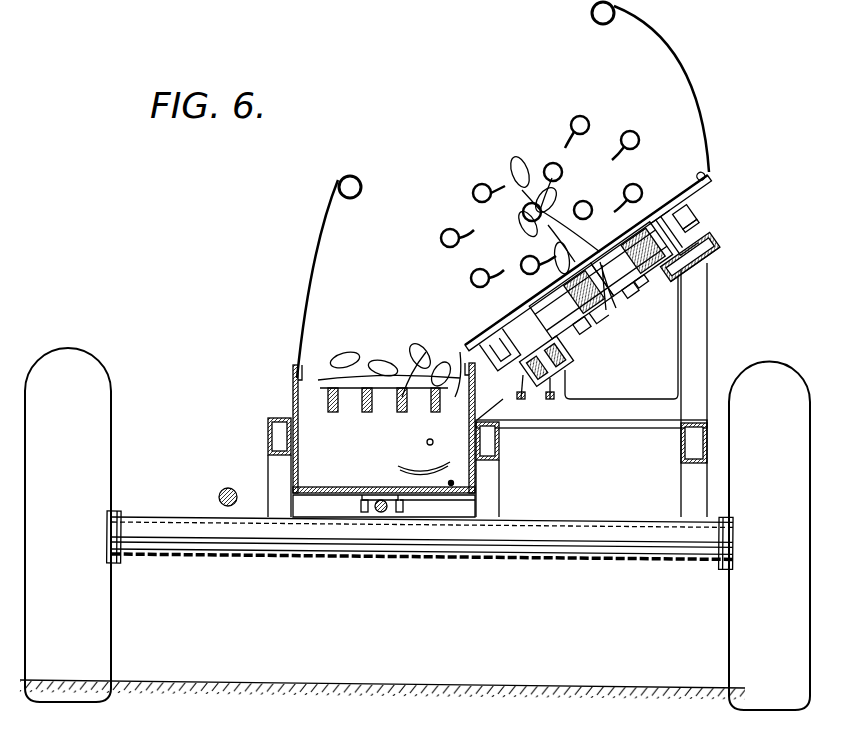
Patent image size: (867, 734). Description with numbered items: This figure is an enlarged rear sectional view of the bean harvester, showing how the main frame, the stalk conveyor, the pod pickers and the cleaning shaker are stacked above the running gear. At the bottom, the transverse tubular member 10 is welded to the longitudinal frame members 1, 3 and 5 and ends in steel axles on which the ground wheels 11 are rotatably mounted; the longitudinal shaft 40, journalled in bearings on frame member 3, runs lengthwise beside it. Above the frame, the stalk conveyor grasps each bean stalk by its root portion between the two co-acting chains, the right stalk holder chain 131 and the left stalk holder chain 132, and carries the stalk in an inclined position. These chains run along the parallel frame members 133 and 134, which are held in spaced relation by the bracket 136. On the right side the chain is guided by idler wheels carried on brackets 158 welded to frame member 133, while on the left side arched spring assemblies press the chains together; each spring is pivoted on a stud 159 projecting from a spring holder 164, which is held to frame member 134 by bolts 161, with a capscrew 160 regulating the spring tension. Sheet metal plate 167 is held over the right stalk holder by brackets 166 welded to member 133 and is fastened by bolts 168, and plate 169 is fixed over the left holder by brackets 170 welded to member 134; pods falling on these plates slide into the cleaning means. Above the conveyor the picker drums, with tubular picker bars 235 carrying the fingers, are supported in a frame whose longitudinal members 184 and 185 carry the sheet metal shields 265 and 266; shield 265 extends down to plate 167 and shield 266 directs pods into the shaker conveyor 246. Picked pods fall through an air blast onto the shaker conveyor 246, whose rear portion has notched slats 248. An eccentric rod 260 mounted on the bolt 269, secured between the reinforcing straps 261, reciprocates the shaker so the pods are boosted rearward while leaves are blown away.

The outside longitudinal frame member 1 is at (681, 453).
The outside longitudinal frame member 3 is at (267, 428).
The longitudinal frame member 5 is at (497, 455).
The transverse tubular member 10 is at (167, 553).
The ground wheel 11 is at (97, 657).
The longitudinal shaft 40 is at (223, 489).
The right stalk holder chain 131 is at (702, 218).
The left stalk holder chain 132 is at (500, 337).
The right stalk holder frame member 133 is at (697, 272).
The left stalk holder frame member 134 is at (563, 368).
The bracket 136 is at (695, 342).
The bracket 158 is at (640, 280).
The stud 159 is at (628, 292).
The capscrew 160 is at (523, 377).
The bolt 161 is at (550, 380).
The spring holder 164 is at (477, 353).
The bracket 166 is at (703, 263).
The plate 167 is at (687, 193).
The bolt 168 is at (663, 220).
The plate 169 is at (535, 303).
The bracket 170 is at (550, 340).
The longitudinal picker frame member 184 is at (591, 18).
The longitudinal picker frame member 185 is at (355, 176).
The picker bar 235 is at (520, 125).
The shaker conveyor 246 is at (286, 388).
The notched slat 248 is at (368, 418).
The eccentric rod 260 is at (380, 513).
The reinforcing strap 261 is at (323, 497).
The sheet metal shield 265 is at (668, 48).
The sheet metal shield 266 is at (312, 263).
The bolt 269 is at (407, 510).